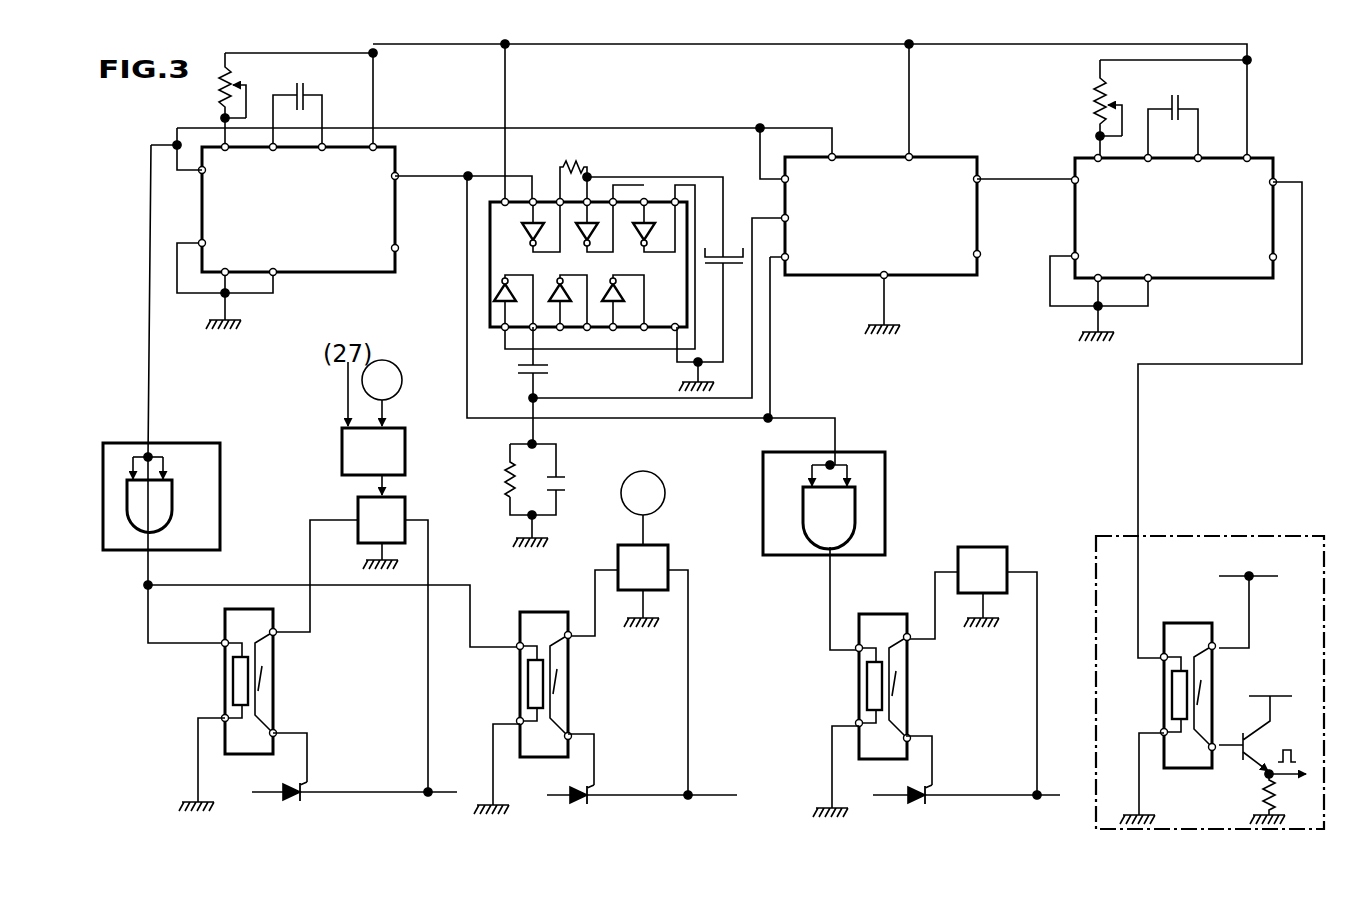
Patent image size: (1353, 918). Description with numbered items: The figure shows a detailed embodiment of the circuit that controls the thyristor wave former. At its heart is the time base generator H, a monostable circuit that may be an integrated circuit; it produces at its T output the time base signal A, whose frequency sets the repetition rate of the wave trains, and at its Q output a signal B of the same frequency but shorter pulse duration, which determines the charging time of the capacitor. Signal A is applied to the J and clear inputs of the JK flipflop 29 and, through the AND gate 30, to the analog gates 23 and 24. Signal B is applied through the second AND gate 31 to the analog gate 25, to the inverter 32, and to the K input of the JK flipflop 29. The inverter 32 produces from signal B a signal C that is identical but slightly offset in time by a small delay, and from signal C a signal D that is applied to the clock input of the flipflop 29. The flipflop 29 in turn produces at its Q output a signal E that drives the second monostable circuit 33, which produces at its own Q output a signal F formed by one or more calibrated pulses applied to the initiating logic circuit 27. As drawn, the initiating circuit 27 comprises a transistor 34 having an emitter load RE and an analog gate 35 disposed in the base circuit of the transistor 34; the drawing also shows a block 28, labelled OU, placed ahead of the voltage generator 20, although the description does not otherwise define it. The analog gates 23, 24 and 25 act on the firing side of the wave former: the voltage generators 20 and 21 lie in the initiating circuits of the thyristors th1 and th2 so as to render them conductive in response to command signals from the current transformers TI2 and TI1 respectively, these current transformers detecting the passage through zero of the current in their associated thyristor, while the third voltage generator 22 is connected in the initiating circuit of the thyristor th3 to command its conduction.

The voltage generator 20 is at (408, 510).
The voltage generator 21 is at (663, 547).
The third voltage generator 22 is at (983, 545).
The analog gate 23 is at (275, 700).
The analog gate 24 is at (570, 702).
The analog gate 25 is at (908, 703).
The initiating logic circuit 27 is at (1198, 536).
The OR gate 28 is at (407, 457).
The JK flipflop 29 is at (881, 244).
The AND gate 30 is at (222, 510).
The second AND gate 31 is at (887, 517).
The inverter 32 is at (490, 270).
The second monostable circuit 33 is at (1163, 200).
The transistor 34 is at (1270, 745).
The analog gate 35 is at (1194, 620).
The time base generator H is at (288, 191).
The current transformer TI1 is at (663, 500).
The current transformer TI2 is at (402, 377).
The thyristor th1 is at (290, 798).
The thyristor th2 is at (577, 802).
The thyristor th3 is at (917, 800).
The emitter load RE is at (1263, 798).